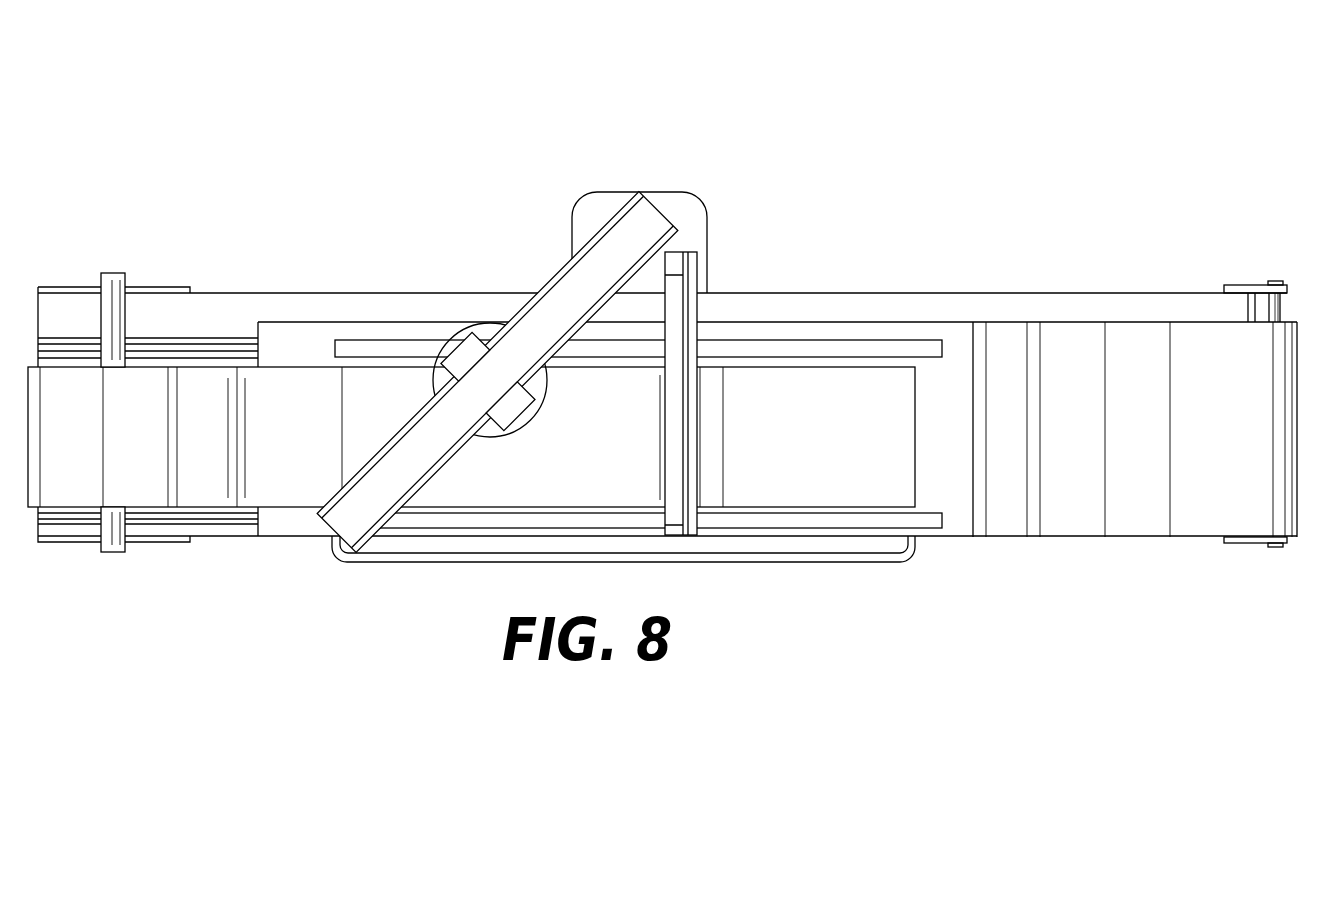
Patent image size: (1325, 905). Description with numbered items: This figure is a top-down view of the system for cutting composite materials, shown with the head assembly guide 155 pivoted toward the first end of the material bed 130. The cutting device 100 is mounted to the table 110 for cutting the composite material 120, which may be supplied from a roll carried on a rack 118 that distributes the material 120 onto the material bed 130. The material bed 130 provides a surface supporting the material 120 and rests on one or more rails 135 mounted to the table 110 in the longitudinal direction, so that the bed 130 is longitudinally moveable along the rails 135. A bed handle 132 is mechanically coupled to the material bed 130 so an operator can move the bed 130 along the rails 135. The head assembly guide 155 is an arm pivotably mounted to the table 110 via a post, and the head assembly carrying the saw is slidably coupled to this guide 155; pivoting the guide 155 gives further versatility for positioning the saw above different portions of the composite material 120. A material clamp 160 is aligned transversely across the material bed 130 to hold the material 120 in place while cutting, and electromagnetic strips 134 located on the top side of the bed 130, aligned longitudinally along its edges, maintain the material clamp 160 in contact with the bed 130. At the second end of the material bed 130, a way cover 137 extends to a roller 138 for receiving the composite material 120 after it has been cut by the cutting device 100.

The cutting device 100 is at (452, 138).
The table 110 is at (1072, 302).
The rack 118 is at (108, 556).
The composite material 120 is at (313, 380).
The material bed 130 is at (957, 330).
The bed handle 132 is at (422, 558).
The electromagnetic strips 134 is at (880, 345).
The rails 135 is at (225, 345).
The way cover 137 is at (1065, 517).
The roller 138 is at (1272, 543).
The head assembly guide 155 is at (652, 216).
The material clamp 160 is at (672, 475).